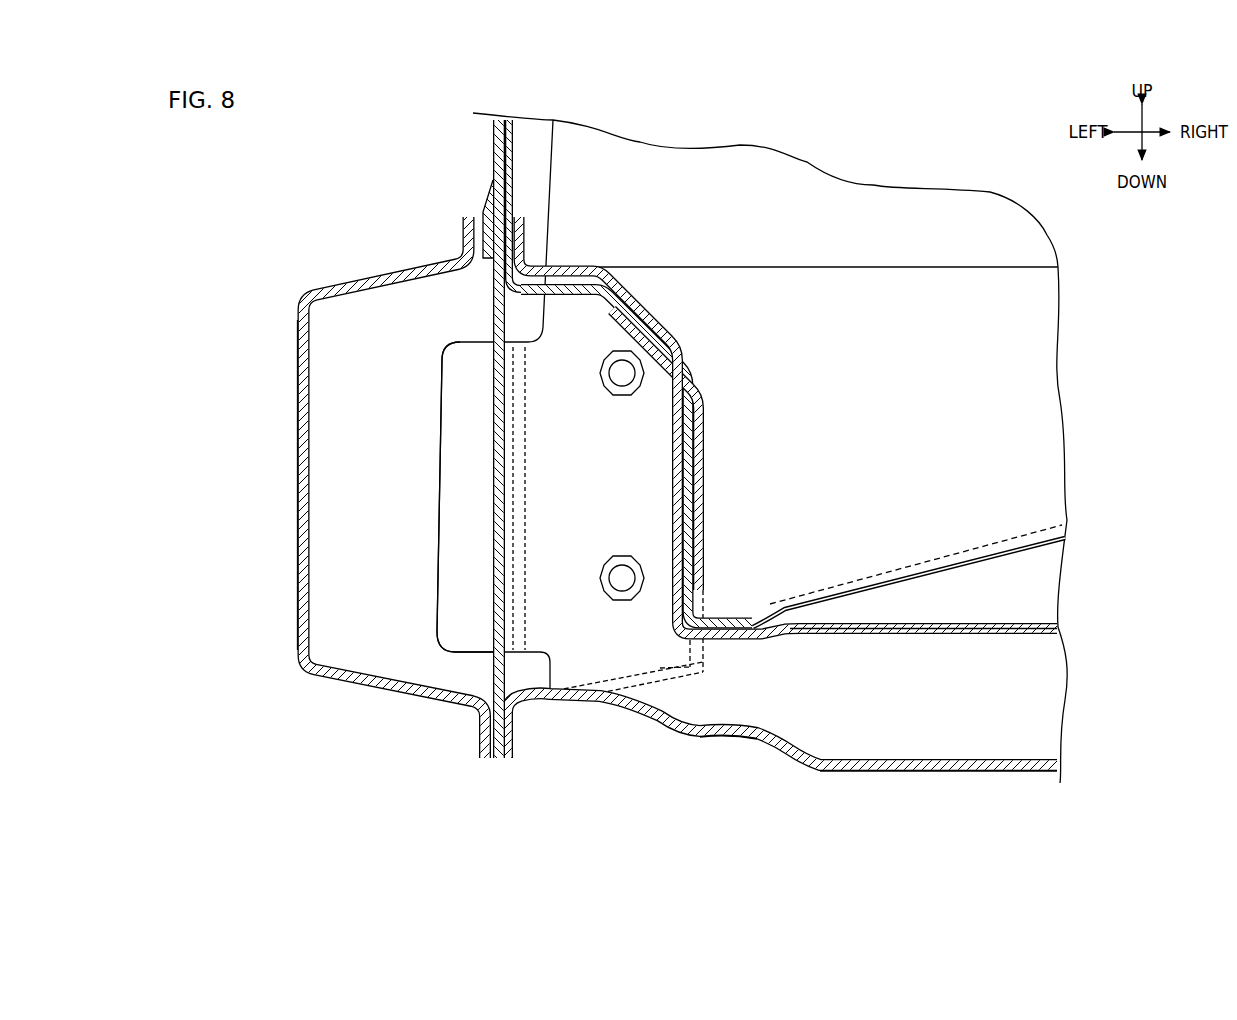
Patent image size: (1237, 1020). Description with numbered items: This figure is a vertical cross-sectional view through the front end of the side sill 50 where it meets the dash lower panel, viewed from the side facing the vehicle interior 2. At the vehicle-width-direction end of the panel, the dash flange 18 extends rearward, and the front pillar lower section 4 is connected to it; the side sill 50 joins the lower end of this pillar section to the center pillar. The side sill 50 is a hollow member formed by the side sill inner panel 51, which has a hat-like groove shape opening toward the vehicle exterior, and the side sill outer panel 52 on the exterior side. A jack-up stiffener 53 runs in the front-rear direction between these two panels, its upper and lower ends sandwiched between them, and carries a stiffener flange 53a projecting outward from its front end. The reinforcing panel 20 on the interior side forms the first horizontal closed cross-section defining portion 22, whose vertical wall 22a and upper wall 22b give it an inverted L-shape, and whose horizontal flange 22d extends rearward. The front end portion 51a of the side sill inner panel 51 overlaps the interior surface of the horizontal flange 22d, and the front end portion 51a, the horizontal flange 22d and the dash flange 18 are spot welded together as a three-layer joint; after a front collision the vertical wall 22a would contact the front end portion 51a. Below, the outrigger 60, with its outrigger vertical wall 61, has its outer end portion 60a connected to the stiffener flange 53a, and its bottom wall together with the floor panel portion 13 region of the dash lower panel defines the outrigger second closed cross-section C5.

The vehicle interior 2 is at (752, 152).
The front pillar lower section 4 is at (493, 157).
The floor panel portion 13 is at (958, 636).
The dash flange 18 is at (670, 463).
The reinforcing panel 20 is at (1030, 557).
The first horizontal closed cross-section defining portion 22 is at (985, 395).
The vertical wall 22a is at (845, 290).
The upper wall 22b is at (935, 267).
The horizontal flange 22d is at (705, 430).
The side sill 50 is at (285, 394).
The side sill inner panel 51 is at (664, 312).
The front end portion of the side sill inner panel 51a is at (630, 371).
The side sill outer panel 52 is at (297, 470).
The jack-up stiffener 53 is at (487, 570).
The stiffener flange 53a is at (465, 520).
The outrigger 60 is at (871, 777).
The outer end portion of the outrigger 60a is at (465, 440).
The outrigger vertical wall 61 is at (623, 633).
The outrigger second closed cross-section C5 is at (808, 712).